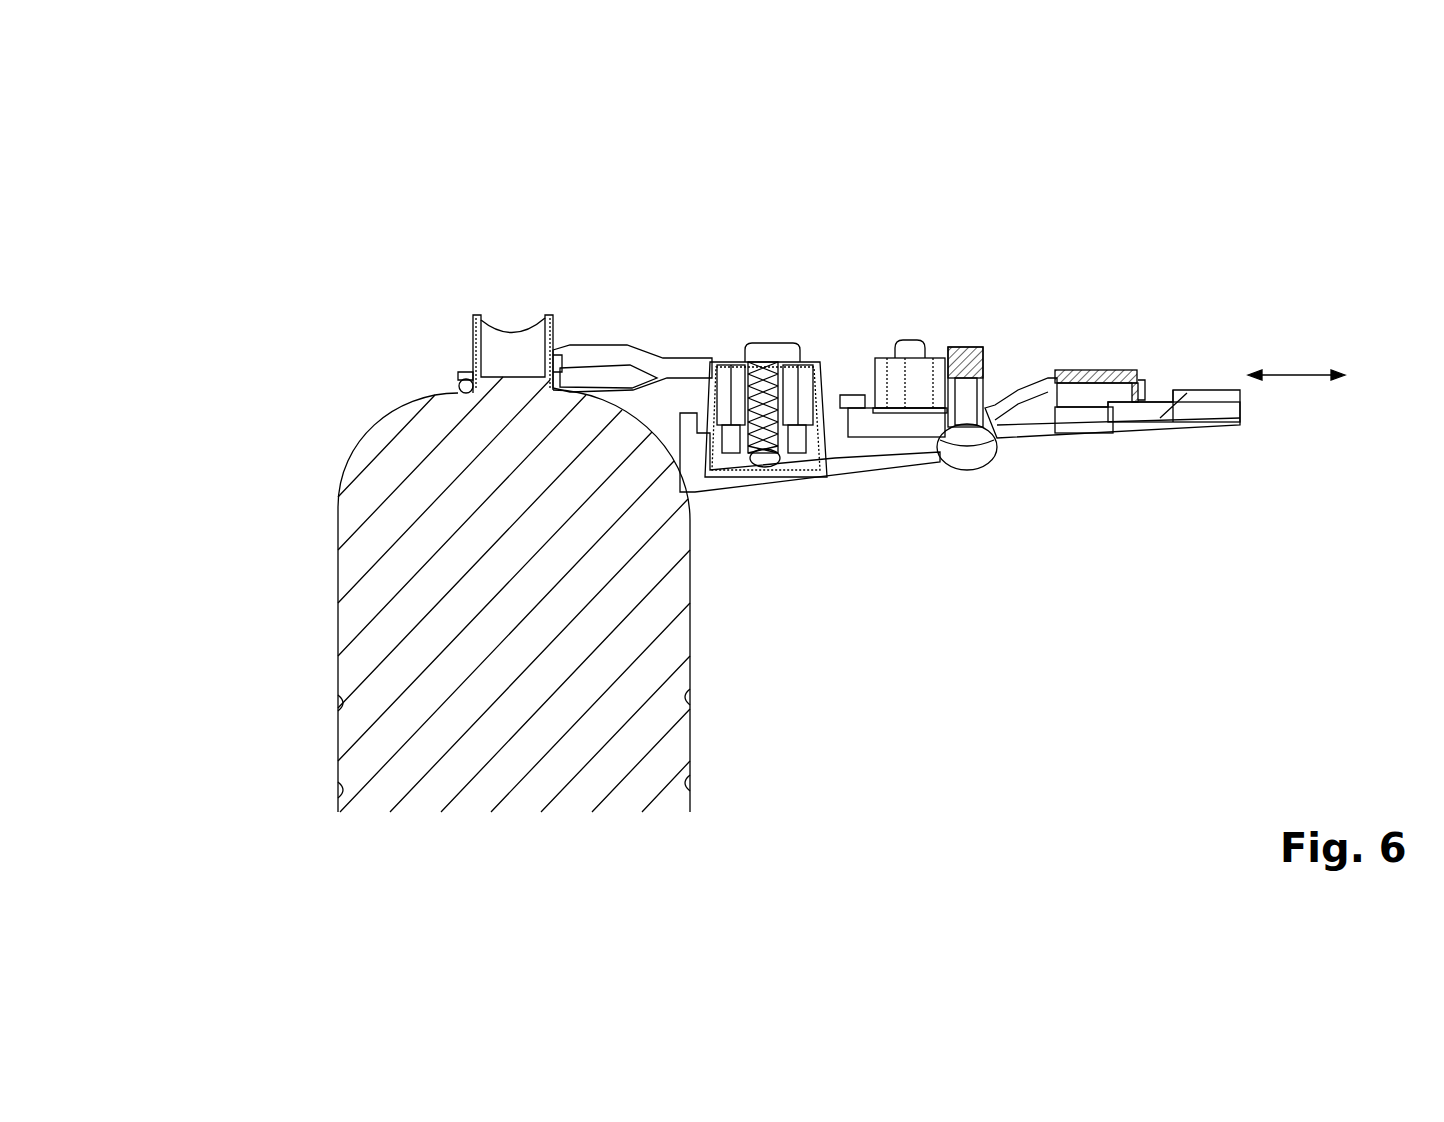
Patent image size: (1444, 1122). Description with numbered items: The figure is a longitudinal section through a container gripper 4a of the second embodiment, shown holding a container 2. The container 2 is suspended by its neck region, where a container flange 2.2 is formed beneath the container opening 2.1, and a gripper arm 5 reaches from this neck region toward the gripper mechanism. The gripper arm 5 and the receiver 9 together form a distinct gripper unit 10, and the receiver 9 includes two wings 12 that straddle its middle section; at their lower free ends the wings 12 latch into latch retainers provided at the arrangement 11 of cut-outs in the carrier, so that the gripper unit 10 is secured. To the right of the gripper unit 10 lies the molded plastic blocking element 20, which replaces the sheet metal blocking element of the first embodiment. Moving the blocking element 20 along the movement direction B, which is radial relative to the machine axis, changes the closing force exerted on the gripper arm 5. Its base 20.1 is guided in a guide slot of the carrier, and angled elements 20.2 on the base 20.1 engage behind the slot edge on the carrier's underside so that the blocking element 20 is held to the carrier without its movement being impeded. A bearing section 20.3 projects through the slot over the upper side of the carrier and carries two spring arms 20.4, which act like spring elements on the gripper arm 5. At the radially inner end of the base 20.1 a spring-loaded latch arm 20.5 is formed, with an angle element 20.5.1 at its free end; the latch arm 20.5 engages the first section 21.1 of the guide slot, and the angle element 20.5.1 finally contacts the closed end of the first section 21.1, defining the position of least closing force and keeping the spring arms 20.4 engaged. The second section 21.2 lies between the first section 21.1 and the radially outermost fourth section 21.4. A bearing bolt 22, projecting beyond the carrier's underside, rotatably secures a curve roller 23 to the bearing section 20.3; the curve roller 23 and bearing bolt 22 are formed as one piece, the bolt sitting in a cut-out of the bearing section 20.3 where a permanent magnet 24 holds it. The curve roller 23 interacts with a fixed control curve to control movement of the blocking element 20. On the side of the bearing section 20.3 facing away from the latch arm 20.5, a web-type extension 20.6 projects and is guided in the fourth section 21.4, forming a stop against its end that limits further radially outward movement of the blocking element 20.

The container 2 is at (340, 572).
The container opening 2.1 is at (502, 320).
The container flange 2.2 is at (462, 372).
The container gripper 4a is at (563, 260).
The gripper arm 5 is at (670, 354).
The receiver 9 is at (767, 385).
The gripper unit 10 is at (727, 340).
The arrangement of cut-outs 11 is at (745, 497).
The wings 12 is at (835, 447).
The blocking element 20 is at (977, 490).
The base 20.1 is at (1045, 448).
The angled elements 20.2 is at (1038, 403).
The bearing section 20.3 is at (987, 380).
The spring arms 20.4 is at (903, 380).
The latch arm 20.5 is at (1100, 368).
The angle element 20.5.1 is at (1142, 375).
The web-type extension 20.6 is at (902, 413).
The first section 21.1 is at (1132, 410).
The second section 21.2 is at (1092, 418).
The fourth section 21.4 is at (869, 425).
The bearing bolt 22 is at (963, 380).
The curve roller 23 is at (993, 463).
The permanent magnet 24 is at (975, 348).
The movement direction B is at (1296, 397).